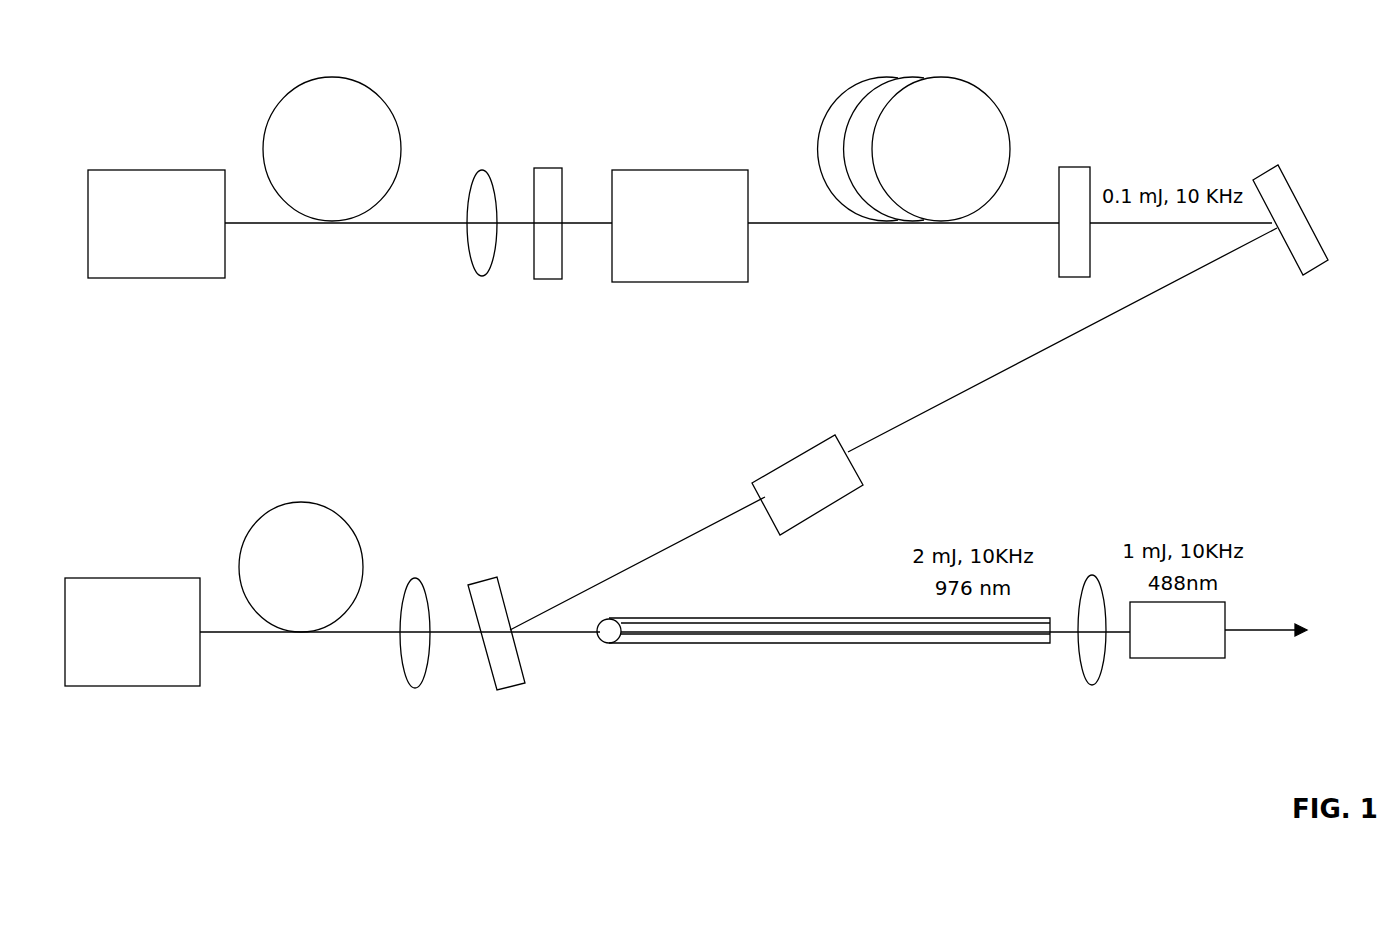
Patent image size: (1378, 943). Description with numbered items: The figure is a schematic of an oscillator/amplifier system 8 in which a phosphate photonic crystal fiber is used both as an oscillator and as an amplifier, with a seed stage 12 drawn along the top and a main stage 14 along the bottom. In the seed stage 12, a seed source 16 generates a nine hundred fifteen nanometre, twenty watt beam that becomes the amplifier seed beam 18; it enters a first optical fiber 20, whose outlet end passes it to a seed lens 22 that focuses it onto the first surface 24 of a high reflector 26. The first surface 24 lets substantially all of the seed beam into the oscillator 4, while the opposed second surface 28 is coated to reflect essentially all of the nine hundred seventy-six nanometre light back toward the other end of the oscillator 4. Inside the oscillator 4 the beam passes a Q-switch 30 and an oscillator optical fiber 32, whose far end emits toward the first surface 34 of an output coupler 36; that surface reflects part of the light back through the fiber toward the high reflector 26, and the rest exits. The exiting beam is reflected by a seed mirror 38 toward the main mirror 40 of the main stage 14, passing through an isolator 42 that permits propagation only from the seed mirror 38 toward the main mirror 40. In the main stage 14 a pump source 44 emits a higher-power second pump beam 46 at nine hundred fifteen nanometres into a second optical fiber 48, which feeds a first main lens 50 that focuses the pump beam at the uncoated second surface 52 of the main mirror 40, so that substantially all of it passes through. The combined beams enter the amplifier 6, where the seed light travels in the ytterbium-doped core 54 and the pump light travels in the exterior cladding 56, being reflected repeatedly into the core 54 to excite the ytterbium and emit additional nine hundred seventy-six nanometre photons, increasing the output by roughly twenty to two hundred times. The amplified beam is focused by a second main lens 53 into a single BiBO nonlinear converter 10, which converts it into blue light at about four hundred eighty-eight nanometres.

The oscillator 4 is at (1148, 113).
The amplifier 6 is at (900, 654).
The system 8 is at (222, 99).
The nonlinear converter 10 is at (1170, 658).
The seed stage 12 is at (1238, 317).
The main stage 14 is at (1263, 492).
The seed source 16 is at (127, 168).
The amplifier seed beam 18 is at (443, 228).
The first optical fiber 20 is at (262, 228).
The seed lens 22 is at (499, 204).
The first surface 24 is at (532, 266).
The high reflector 26 is at (575, 215).
The second surface 28 is at (562, 274).
The Q-switch 30 is at (645, 168).
The oscillator optical fiber 32 is at (922, 227).
The first surface 34 is at (1057, 240).
The output coupler 36 is at (1072, 165).
The seed mirror 38 is at (1307, 212).
The main mirror 40 is at (503, 590).
The isolator 42 is at (788, 463).
The pump source 44 is at (138, 687).
The second pump beam 46 is at (367, 637).
The second optical fiber 48 is at (288, 637).
The first main lens 50 is at (447, 614).
The second surface 52 is at (495, 680).
The second main lens 53 is at (1080, 693).
The core 54 is at (832, 645).
The cladding 56 is at (677, 647).